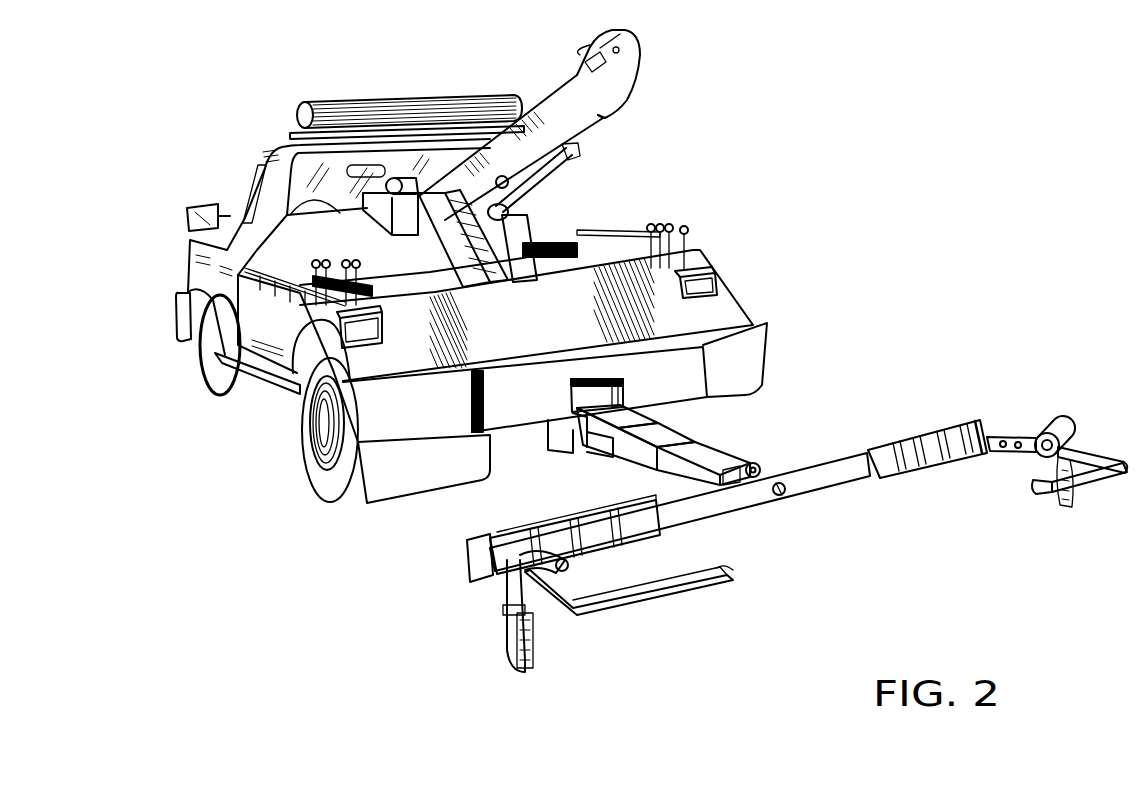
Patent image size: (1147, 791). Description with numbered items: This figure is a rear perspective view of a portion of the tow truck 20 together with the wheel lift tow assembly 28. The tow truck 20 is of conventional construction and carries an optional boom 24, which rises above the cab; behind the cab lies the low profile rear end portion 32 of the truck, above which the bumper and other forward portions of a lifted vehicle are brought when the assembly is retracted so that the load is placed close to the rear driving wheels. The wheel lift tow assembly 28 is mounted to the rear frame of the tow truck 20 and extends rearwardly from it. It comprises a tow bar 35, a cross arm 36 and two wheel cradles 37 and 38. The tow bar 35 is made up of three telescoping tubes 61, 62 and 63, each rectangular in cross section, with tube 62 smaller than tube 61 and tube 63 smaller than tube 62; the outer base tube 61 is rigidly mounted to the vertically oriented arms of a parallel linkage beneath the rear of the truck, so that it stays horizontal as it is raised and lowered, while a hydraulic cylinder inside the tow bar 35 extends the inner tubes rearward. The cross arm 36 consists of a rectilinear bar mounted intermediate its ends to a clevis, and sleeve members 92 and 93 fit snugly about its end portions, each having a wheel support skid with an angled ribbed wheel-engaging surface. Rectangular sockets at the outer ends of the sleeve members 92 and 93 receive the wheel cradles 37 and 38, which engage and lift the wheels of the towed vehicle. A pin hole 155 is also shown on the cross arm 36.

The tow truck 20 is at (577, 193).
The boom 24 is at (540, 100).
The wheel lift tow assembly 28 is at (877, 434).
The low profile rear end portion 32 is at (720, 311).
The tow bar 35 is at (640, 452).
The cross arm 36 is at (827, 461).
The wheel cradle 37 is at (568, 617).
The wheel cradle 38 is at (1087, 453).
The telescoping tube 61 is at (625, 413).
The telescoping tube 62 is at (657, 432).
The telescoping tube 63 is at (707, 453).
The sleeve member 92 is at (622, 547).
The sleeve member 93 is at (930, 457).
The pin hole 155 is at (784, 497).